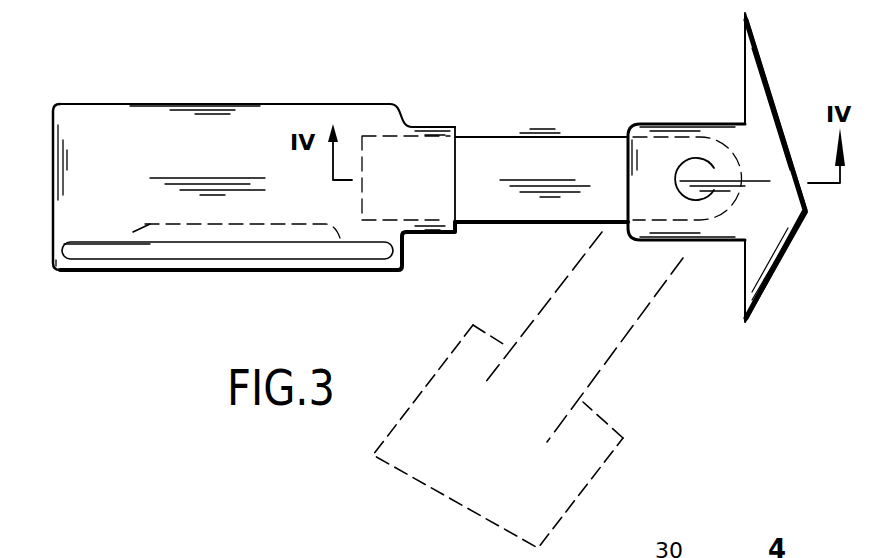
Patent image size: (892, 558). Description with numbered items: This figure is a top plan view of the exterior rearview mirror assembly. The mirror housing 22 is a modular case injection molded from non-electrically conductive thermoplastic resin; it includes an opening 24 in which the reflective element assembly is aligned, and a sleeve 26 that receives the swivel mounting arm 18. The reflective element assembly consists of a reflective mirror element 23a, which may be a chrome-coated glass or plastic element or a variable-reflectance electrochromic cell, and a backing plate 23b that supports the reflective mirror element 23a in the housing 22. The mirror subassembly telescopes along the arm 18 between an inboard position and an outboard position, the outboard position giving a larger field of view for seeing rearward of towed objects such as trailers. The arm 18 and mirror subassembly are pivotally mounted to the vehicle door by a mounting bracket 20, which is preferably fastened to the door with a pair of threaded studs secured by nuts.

The mirror housing 22 is at (292, 104).
The sleeve 26 is at (434, 127).
The swivel mounting arm 18 is at (540, 148).
The mounting bracket 20 is at (735, 135).
The reflective mirror element 23a is at (100, 248).
The backing plate 23b is at (136, 222).
The opening 24 is at (70, 278).